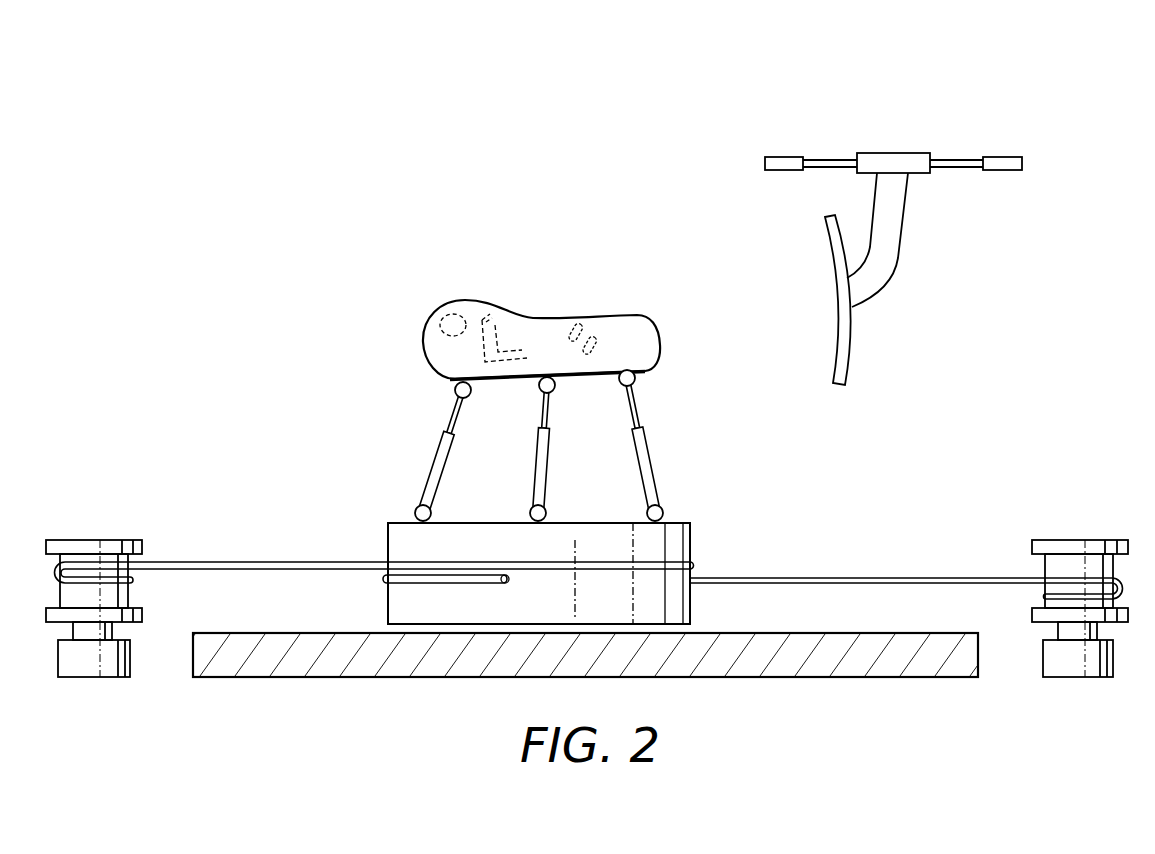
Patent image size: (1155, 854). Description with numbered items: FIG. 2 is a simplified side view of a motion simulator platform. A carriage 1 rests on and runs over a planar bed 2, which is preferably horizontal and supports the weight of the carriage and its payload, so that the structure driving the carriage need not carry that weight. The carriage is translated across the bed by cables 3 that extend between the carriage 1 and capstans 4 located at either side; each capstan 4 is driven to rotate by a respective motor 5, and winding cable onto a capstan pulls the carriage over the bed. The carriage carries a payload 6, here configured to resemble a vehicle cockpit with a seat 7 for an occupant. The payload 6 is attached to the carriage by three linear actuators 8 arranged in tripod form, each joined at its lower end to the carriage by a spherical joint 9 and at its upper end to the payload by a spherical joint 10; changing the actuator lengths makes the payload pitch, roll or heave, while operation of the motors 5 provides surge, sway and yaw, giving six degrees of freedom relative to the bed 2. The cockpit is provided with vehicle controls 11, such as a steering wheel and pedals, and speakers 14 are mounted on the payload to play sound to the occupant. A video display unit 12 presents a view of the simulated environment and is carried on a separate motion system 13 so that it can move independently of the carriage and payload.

The carriage 1 is at (693, 535).
The planar bed 2 is at (813, 679).
The cables 3 is at (235, 560).
The capstans 4 is at (93, 539).
The motor 5 is at (95, 679).
The payload 6 is at (398, 351).
The seat 7 is at (493, 315).
The linear actuators 8 is at (435, 468).
The spherical joint 9 is at (415, 508).
The spherical joint 10 is at (455, 392).
The vehicle controls 11 is at (583, 317).
The video display unit 12 is at (906, 234).
The separate motion system 13 is at (964, 134).
The speakers 14 is at (453, 313).